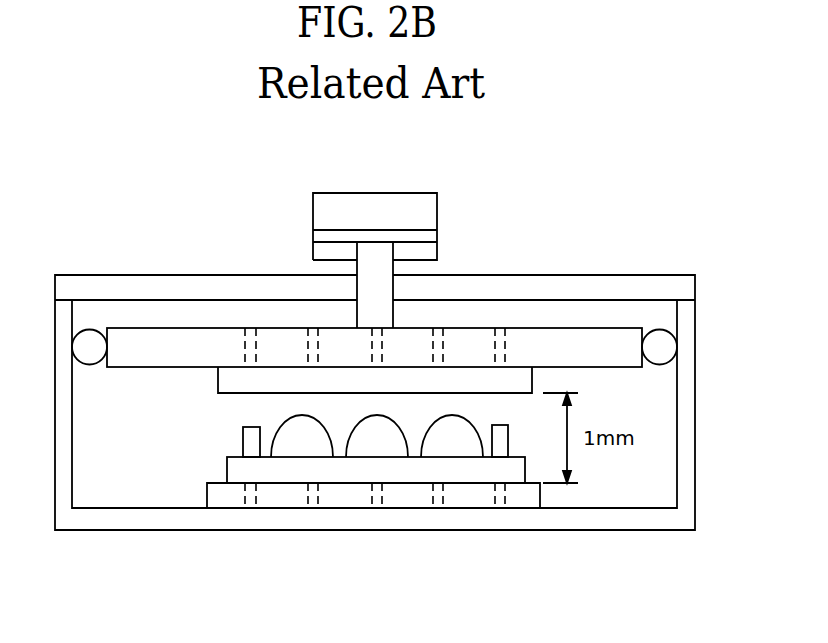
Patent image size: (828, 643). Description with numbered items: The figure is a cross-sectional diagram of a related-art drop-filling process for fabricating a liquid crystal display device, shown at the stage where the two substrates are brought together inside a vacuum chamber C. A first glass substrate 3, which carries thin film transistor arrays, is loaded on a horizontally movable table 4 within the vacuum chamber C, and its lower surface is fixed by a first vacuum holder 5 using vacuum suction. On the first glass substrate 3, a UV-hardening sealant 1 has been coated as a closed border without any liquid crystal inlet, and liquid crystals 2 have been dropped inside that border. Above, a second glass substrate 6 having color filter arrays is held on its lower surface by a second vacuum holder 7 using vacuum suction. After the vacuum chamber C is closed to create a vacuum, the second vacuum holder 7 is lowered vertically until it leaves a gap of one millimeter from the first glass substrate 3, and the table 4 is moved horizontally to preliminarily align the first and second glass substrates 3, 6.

The UV-hardening sealant 1 is at (243, 438).
The liquid crystals 2 is at (388, 443).
The first glass substrate 3 is at (505, 470).
The horizontally movable table 4 is at (278, 497).
The first vacuum holder 5 is at (318, 495).
The second glass substrate 6 is at (218, 372).
The second vacuum holder 7 is at (445, 345).
The vacuum chamber C is at (695, 422).